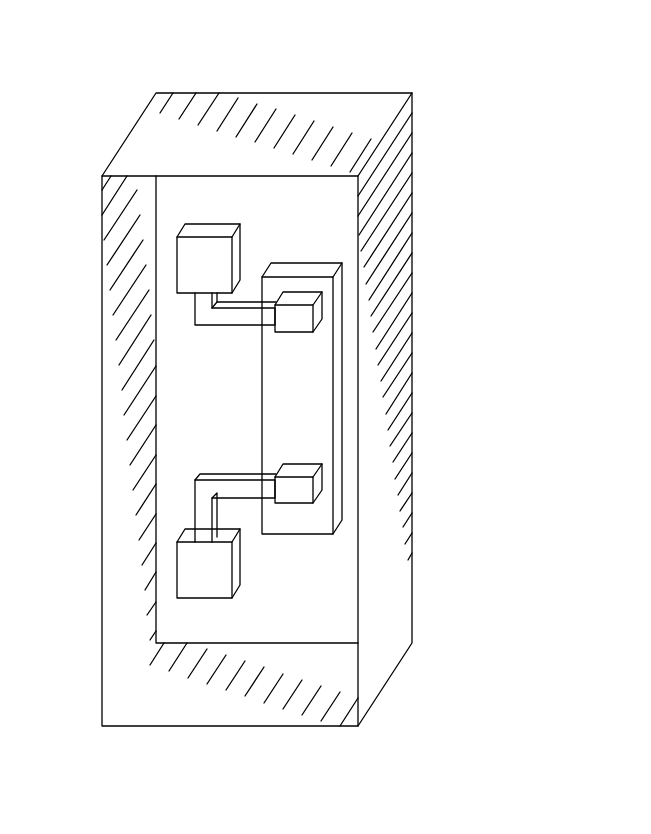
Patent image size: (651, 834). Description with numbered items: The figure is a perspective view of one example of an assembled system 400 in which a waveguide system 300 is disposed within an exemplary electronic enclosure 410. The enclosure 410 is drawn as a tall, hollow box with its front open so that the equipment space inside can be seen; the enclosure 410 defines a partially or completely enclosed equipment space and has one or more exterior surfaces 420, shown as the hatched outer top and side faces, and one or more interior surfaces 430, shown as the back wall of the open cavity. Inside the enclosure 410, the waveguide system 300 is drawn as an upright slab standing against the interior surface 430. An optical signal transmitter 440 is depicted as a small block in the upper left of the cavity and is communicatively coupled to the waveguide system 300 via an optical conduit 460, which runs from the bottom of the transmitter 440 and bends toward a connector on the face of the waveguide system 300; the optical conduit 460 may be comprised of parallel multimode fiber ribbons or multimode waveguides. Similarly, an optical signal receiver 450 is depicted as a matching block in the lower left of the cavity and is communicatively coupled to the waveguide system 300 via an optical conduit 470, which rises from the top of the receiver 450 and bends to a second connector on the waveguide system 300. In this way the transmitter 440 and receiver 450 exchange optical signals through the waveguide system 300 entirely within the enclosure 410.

The assembled system 400 is at (535, 213).
The electronic enclosure 410 is at (328, 93).
The exterior surface 420 is at (176, 131).
The interior surface 430 is at (323, 585).
The waveguide system 300 is at (362, 394).
The optical signal transmitter 440 is at (177, 257).
The optical signal receiver 450 is at (177, 563).
The optical conduit 460 is at (195, 305).
The optical conduit 470 is at (196, 500).